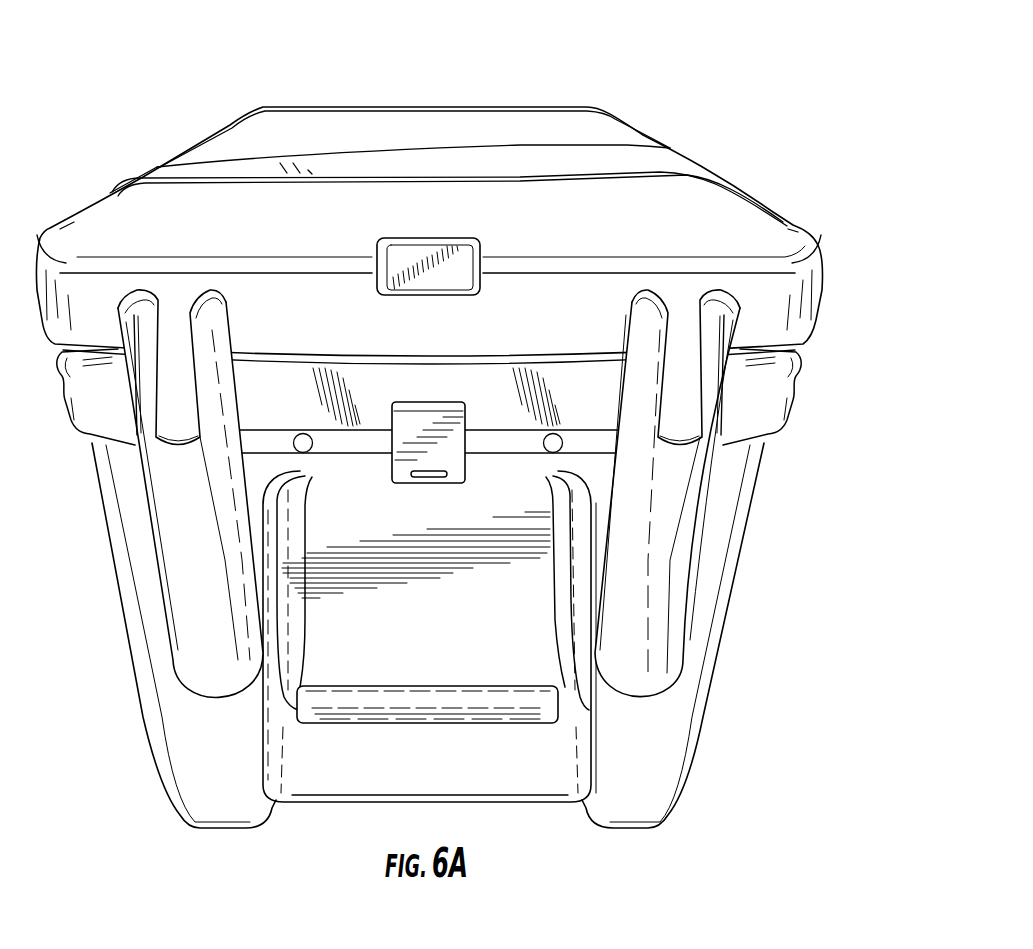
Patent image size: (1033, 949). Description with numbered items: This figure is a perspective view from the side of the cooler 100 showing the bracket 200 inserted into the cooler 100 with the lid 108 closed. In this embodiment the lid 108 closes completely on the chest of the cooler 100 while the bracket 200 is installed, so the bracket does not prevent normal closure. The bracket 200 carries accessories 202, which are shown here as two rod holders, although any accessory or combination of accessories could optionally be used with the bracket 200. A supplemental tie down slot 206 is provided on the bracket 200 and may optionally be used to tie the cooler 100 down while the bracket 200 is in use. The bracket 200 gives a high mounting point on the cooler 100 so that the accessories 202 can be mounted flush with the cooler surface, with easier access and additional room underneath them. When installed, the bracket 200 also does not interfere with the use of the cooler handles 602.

The cooler 100 is at (603, 78).
The lid 108 is at (175, 215).
The bracket 200 is at (500, 348).
The accessories 202 is at (642, 706).
The supplemental tie down slot 206 is at (417, 489).
The cooler handles 602 is at (410, 737).